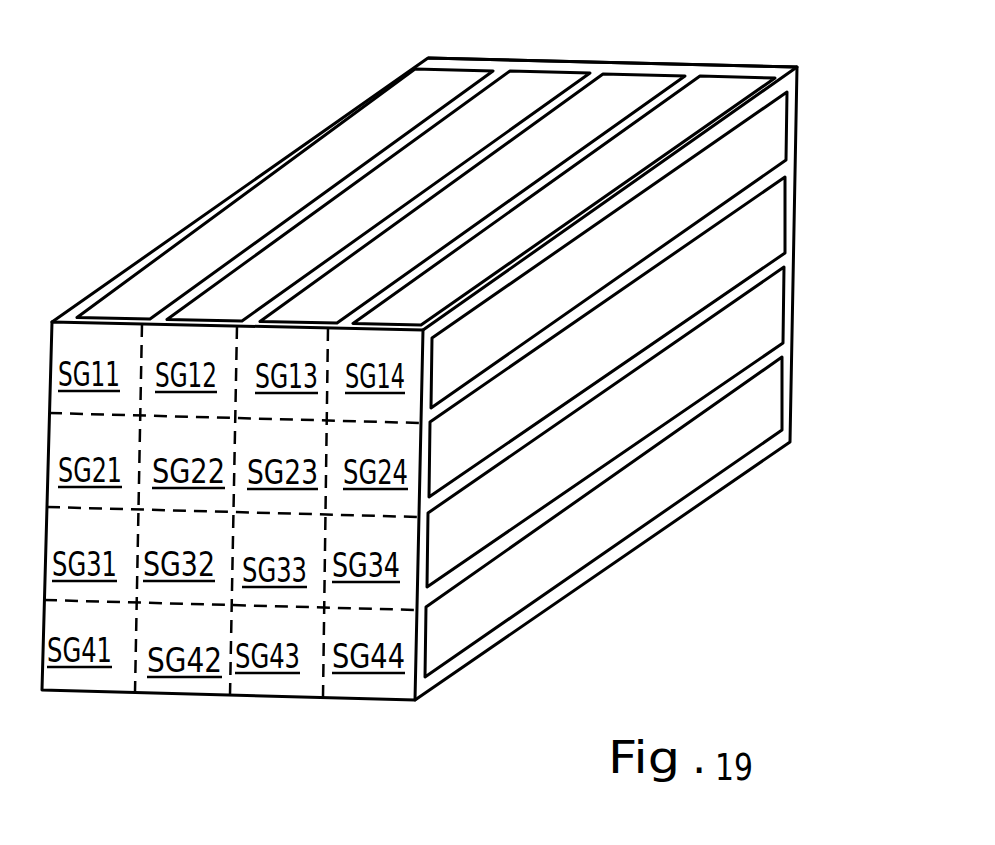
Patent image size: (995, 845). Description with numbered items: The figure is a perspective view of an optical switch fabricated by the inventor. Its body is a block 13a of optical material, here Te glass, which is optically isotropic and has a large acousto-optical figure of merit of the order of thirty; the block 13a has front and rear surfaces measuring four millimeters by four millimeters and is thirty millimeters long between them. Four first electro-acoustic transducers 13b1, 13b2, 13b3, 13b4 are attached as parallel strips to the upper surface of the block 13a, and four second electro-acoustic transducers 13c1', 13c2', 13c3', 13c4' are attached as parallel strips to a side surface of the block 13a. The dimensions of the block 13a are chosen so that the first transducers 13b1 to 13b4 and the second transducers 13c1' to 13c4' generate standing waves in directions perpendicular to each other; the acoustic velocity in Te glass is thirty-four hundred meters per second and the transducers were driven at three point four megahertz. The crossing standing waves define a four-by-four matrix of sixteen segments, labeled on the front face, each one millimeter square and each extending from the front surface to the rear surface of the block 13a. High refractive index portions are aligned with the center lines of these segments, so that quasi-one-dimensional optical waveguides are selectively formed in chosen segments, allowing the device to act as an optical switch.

The block of optical material 13a is at (718, 57).
The first electro-acoustic transducer 13b1 is at (433, 92).
The first electro-acoustic transducer 13b2 is at (518, 89).
The first electro-acoustic transducer 13b3 is at (630, 88).
The first electro-acoustic transducer 13b4 is at (720, 96).
The second electro-acoustic transducer 13c1' is at (652, 250).
The second electro-acoustic transducer 13c2' is at (653, 337).
The second electro-acoustic transducer 13c3' is at (660, 427).
The second electro-acoustic transducer 13c4' is at (659, 517).